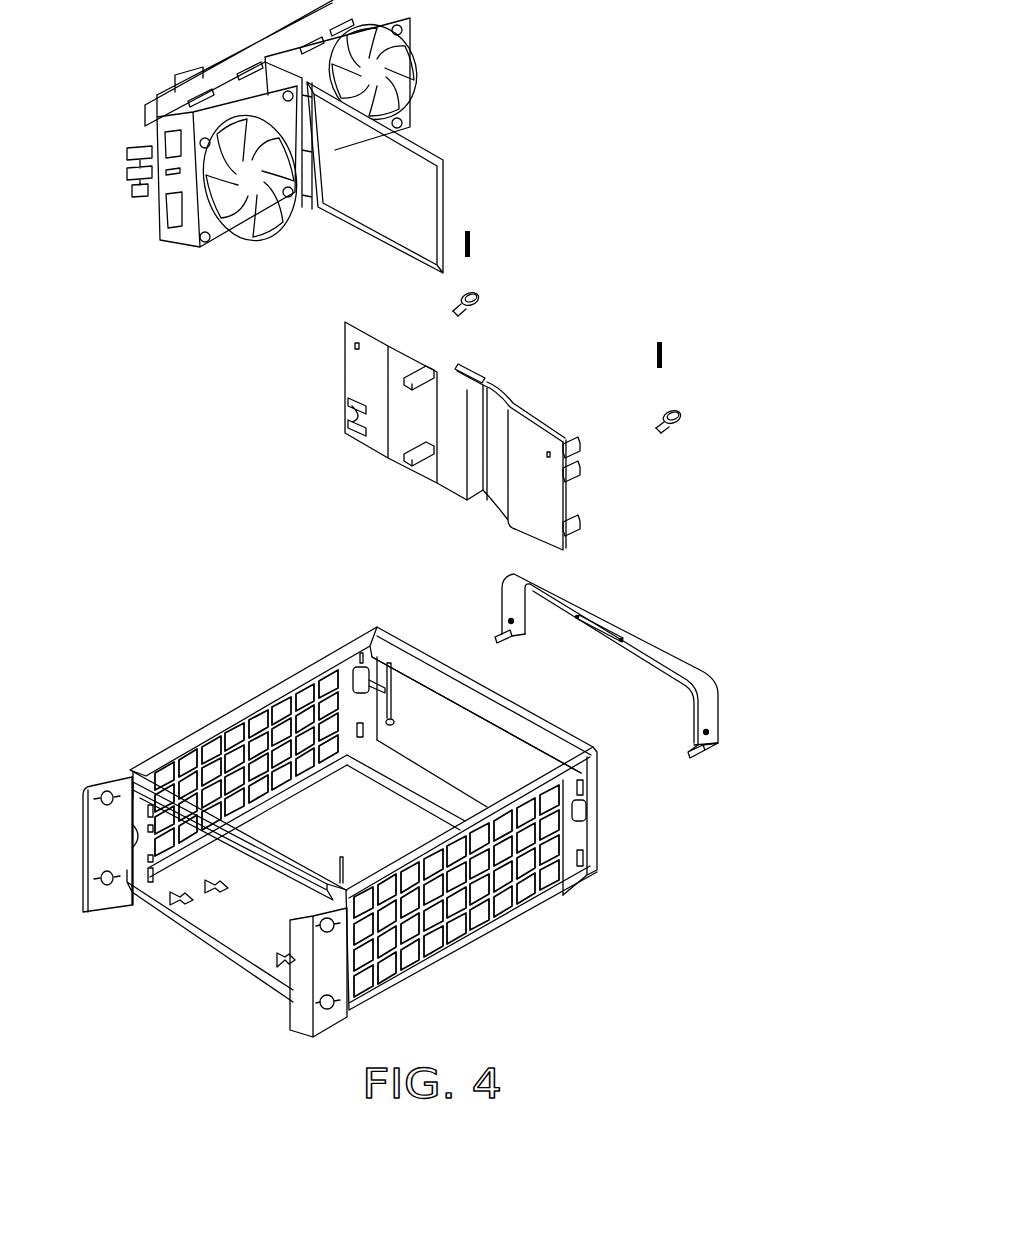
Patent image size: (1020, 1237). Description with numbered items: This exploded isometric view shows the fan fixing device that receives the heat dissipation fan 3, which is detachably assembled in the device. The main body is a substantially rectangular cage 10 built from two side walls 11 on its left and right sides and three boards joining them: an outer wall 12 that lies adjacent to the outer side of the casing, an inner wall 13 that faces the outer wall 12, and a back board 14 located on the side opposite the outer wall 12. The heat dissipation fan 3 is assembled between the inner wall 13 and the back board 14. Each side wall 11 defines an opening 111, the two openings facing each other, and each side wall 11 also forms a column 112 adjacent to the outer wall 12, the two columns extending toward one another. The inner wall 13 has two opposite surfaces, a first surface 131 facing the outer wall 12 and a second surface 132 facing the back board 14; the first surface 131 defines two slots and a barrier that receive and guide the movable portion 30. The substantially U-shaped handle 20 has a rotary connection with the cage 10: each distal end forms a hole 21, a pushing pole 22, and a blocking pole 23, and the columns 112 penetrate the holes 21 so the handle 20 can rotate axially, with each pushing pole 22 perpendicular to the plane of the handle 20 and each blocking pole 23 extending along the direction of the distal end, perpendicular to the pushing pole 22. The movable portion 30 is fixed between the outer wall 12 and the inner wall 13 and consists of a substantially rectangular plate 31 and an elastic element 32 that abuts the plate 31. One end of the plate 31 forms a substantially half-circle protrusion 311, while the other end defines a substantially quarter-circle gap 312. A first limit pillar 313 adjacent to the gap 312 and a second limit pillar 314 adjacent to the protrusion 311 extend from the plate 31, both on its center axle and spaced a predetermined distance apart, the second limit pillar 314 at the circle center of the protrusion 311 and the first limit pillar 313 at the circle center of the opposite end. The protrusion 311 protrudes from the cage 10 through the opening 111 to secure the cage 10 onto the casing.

The heat dissipation fan 3 is at (240, 70).
The cage 10 is at (183, 703).
The side wall 11 is at (483, 880).
The opening 111 is at (355, 688).
The column 112 is at (389, 705).
The outer wall 12 is at (432, 714).
The inner wall 13 is at (355, 377).
The first surface 131 is at (541, 420).
The second surface 132 is at (548, 512).
The back board 14 is at (236, 925).
The handle 20 is at (643, 611).
The hole 21 is at (709, 732).
The pushing pole 22 is at (696, 755).
The blocking pole 23 is at (704, 749).
The movable portion 30 is at (733, 356).
The plate 31 is at (676, 407).
The protrusion 311 is at (685, 430).
The gap 312 is at (479, 309).
The first limit pillar 313 is at (468, 314).
The second limit pillar 314 is at (452, 299).
The elastic element 32 is at (664, 360).